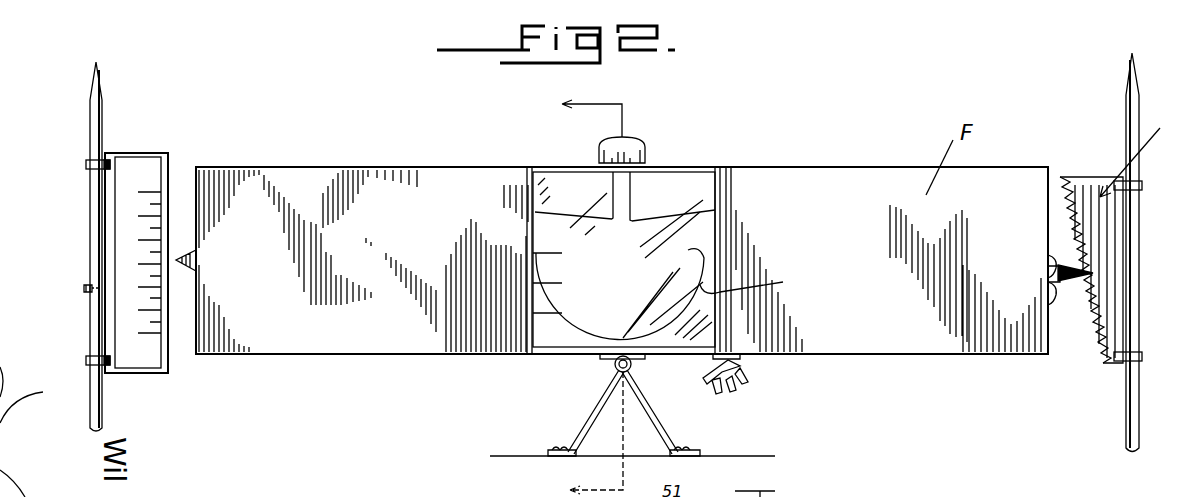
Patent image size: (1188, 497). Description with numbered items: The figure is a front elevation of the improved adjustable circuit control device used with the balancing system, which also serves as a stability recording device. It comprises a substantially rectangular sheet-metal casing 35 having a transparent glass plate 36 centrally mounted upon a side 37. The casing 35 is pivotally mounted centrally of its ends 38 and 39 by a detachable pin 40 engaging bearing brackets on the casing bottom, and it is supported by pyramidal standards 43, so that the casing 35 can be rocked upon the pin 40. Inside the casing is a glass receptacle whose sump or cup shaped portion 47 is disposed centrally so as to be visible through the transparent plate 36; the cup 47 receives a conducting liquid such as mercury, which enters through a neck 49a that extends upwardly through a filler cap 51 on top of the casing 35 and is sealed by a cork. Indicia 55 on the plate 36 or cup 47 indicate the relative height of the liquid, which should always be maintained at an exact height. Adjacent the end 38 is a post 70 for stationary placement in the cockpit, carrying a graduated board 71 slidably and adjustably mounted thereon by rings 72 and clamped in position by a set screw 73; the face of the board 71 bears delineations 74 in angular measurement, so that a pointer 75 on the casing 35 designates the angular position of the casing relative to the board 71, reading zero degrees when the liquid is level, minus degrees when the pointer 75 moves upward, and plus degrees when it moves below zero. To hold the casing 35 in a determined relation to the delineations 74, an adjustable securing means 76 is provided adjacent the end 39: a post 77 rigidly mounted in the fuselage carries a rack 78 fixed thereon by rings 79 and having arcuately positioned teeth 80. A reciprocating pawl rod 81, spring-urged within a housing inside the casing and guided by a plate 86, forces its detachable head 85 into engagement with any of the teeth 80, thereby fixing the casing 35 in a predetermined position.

The casing 35 is at (777, 194).
The transparent glass plate 36 is at (558, 197).
The side 37 is at (832, 227).
The end 38 is at (196, 212).
The end 39 is at (1050, 185).
The detachable pin 40 is at (613, 366).
The pyramidal standards 43 is at (590, 420).
The sump or cup shaped portion 47 is at (753, 286).
The neck 49a is at (634, 208).
The filler cap 51 is at (638, 150).
The indicia 55 is at (580, 254).
The post 70 is at (92, 113).
The graduated board 71 is at (133, 170).
The rings 72 is at (86, 164).
The set screw 73 is at (82, 290).
The delineations 74 is at (127, 234).
The pointer 75 is at (186, 271).
The adjustable securing means 76 is at (1135, 153).
The post 77 is at (1134, 282).
The rack 78 is at (1083, 195).
The rings 79 is at (1142, 186).
The teeth 80 is at (1098, 339).
The pawl rod 81 is at (1060, 274).
The detachable head 85 is at (1068, 282).
The plate 86 is at (1050, 256).